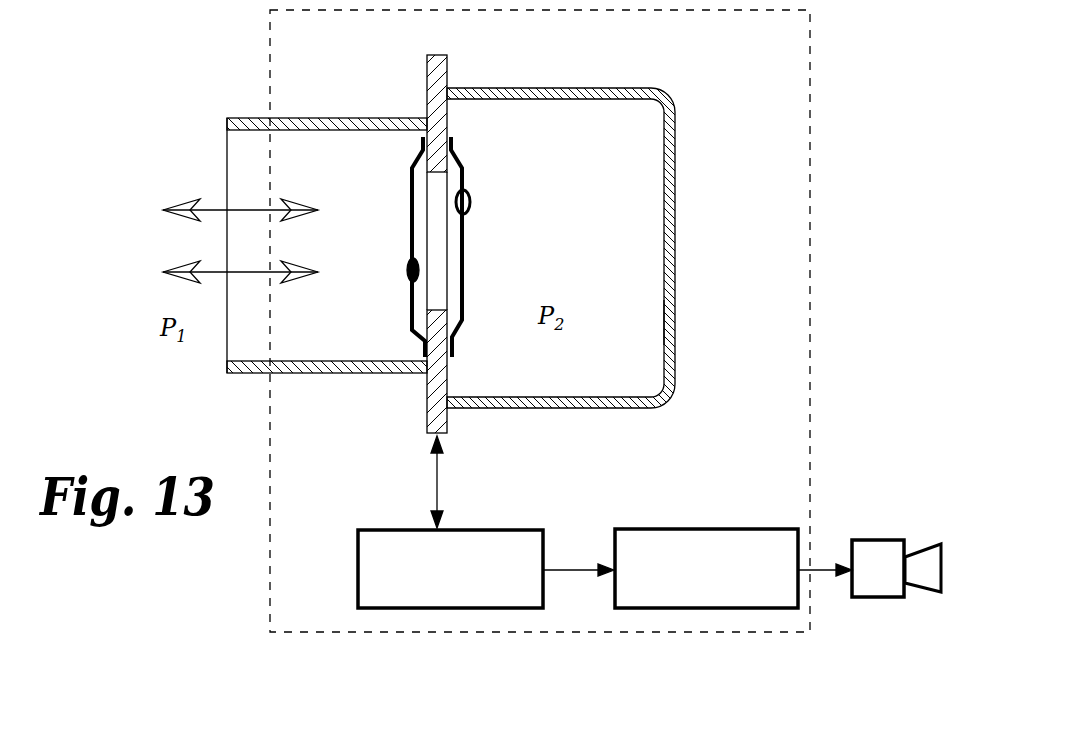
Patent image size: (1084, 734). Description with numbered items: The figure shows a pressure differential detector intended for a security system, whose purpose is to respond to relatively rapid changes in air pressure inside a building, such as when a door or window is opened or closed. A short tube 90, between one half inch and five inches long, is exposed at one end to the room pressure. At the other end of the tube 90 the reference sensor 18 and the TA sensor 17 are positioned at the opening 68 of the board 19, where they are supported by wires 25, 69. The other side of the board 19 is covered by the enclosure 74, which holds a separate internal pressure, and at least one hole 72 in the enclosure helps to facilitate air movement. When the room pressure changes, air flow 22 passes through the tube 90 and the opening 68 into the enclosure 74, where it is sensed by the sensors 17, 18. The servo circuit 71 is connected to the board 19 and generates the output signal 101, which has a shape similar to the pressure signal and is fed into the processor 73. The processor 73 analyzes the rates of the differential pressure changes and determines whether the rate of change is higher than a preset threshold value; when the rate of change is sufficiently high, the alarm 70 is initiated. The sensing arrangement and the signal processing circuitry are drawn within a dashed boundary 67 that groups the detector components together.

The TA sensor 17 is at (405, 263).
The reference sensor 18 is at (470, 202).
The board 19 is at (440, 72).
The air flow 22 is at (160, 193).
The wire 25 is at (465, 308).
The measurement system 67 is at (792, 365).
The opening 68 is at (440, 257).
The wire 69 is at (413, 300).
The alarm 70 is at (928, 565).
The servo circuit 71 is at (372, 573).
The hole 72 is at (674, 243).
The processor 73 is at (705, 538).
The enclosure 74 is at (653, 323).
The short tube 90 is at (233, 124).
The output signal 101 is at (575, 575).